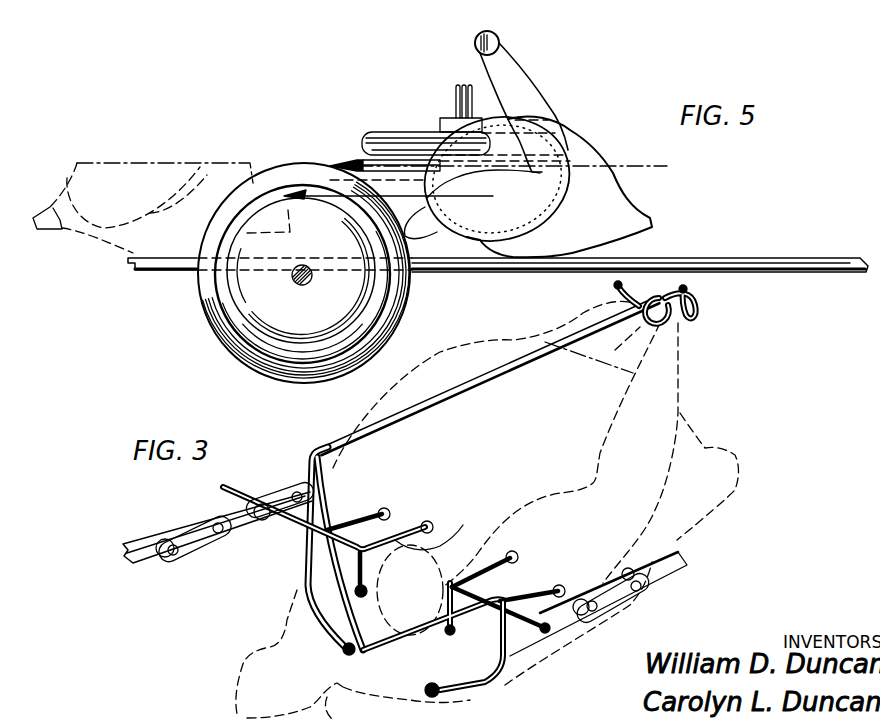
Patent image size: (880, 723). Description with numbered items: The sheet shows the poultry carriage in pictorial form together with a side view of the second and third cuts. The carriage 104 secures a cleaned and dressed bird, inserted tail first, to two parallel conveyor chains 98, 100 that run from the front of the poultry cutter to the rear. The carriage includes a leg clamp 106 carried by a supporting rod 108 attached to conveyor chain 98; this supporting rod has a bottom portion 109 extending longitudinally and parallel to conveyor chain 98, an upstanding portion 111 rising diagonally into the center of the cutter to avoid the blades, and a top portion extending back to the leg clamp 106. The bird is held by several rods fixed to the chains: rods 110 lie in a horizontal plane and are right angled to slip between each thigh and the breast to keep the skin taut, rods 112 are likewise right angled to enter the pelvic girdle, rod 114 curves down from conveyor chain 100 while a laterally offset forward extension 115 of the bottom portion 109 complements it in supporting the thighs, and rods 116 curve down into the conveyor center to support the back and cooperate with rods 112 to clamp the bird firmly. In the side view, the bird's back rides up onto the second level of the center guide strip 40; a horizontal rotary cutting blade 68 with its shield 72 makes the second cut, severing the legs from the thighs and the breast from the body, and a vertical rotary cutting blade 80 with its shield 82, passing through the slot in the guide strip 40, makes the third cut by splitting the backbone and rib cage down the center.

In FIG. 5, the center guide strip 40 is at (483, 261).
In FIG. 5, the rotary cutting blade 68 is at (590, 166).
In FIG. 5, the shield 72 is at (538, 140).
In FIG. 5, the rotary cutting blade 80 is at (205, 292).
In FIG. 5, the shield 82 is at (258, 309).
In FIG. 3, the conveyor chain 98 is at (632, 603).
In FIG. 3, the conveyor chain 100 is at (247, 497).
In FIG. 3, the carriage 104 is at (268, 580).
In FIG. 3, the leg clamp 106 is at (705, 310).
In FIG. 3, the supporting rod 108 is at (523, 368).
In FIG. 3, the bottom portion 109 is at (408, 641).
In FIG. 3, the rod 110 is at (470, 567).
In FIG. 3, the upstanding portion 111 is at (328, 500).
In FIG. 3, the rod 112 is at (363, 572).
In FIG. 3, the rod 114 is at (372, 517).
In FIG. 3, the forward extension 115 is at (537, 601).
In FIG. 3, the rod 116 is at (425, 682).